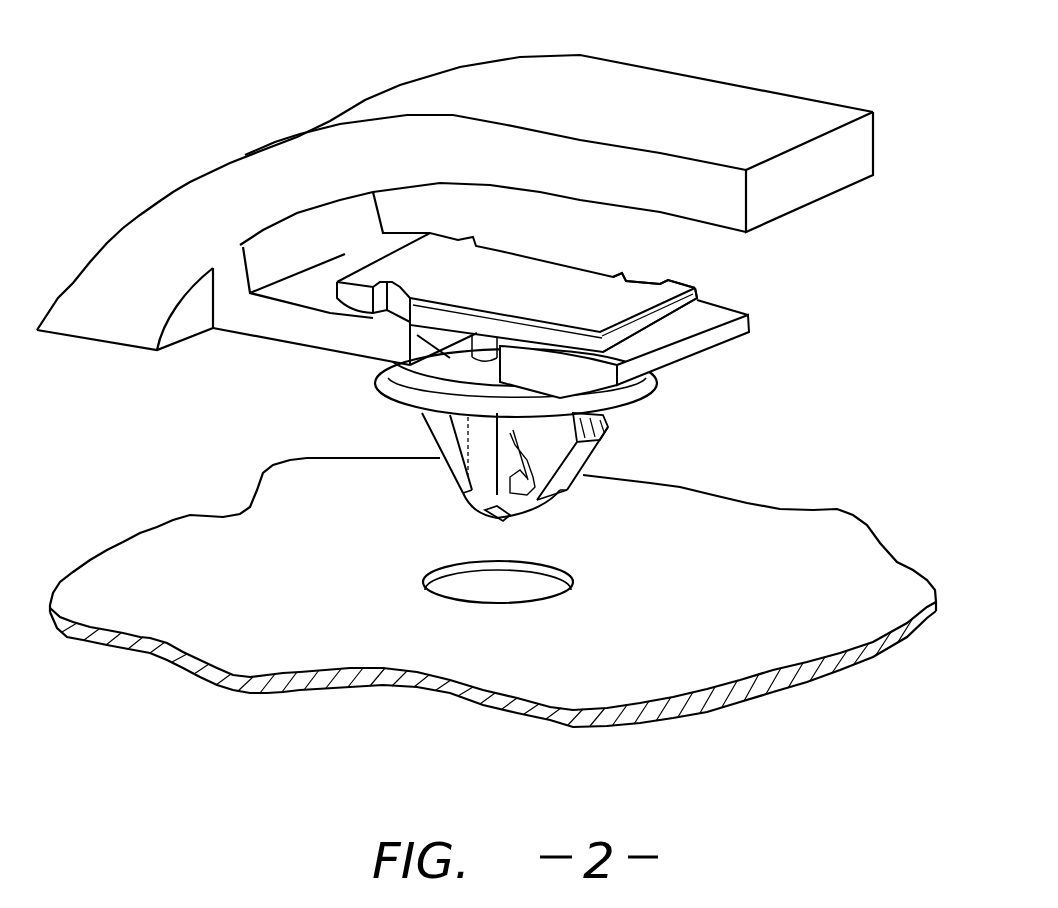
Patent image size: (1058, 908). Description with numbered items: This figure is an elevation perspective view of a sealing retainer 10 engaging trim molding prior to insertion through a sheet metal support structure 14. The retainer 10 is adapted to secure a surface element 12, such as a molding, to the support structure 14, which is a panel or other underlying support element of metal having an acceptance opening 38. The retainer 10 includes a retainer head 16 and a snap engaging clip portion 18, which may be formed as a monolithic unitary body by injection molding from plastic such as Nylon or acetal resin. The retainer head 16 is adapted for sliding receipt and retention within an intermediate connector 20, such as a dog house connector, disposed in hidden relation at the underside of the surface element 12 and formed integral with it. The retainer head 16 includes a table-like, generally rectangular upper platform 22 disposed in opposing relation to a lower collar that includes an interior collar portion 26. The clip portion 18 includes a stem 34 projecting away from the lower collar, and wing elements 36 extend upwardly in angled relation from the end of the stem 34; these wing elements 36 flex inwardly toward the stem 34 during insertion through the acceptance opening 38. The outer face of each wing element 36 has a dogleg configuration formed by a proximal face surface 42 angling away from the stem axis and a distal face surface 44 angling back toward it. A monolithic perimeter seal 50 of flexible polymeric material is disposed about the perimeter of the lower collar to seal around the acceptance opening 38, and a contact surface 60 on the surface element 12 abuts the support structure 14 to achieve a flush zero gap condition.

The retainer 10 is at (679, 279).
The surface element 12 is at (735, 77).
The sheet metal support structure 14 is at (675, 653).
The retainer head 16 is at (520, 264).
The clip portion 18 is at (463, 515).
The intermediate connector 20 is at (733, 303).
The upper platform 22 is at (577, 284).
The interior collar portion 26 is at (447, 357).
The stem 34 is at (557, 505).
The wing elements 36 is at (443, 427).
The acceptance opening 38 is at (490, 592).
The proximal face surface 42 is at (448, 475).
The distal face surface 44 is at (597, 420).
The perimeter seal 50 is at (382, 400).
The contact surface 60 is at (87, 343).